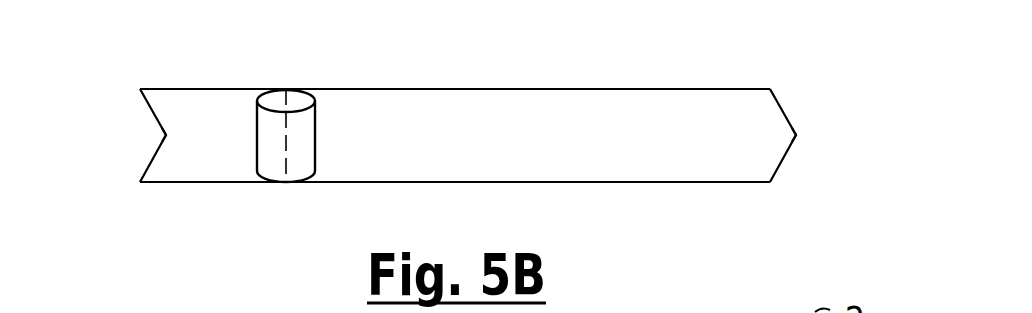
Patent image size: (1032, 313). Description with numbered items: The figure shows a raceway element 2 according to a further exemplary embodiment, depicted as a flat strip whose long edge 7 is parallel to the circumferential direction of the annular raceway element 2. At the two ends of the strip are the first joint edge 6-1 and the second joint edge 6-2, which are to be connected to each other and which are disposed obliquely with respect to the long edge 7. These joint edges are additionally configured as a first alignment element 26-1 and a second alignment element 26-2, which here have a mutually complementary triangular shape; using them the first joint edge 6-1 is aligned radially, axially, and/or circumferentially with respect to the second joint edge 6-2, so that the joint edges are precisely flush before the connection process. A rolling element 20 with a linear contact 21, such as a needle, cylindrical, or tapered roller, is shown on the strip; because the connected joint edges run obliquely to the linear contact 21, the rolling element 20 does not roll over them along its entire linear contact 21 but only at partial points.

The raceway element 2 is at (812, 45).
The long edge 7 is at (554, 183).
The first joint edge 6-1 is at (816, 101).
The second joint edge 6-2 is at (120, 128).
The first alignment element 26-1 is at (796, 135).
The second alignment element 26-2 is at (166, 135).
The rolling element 20 is at (297, 172).
The linear contact 21 is at (277, 98).